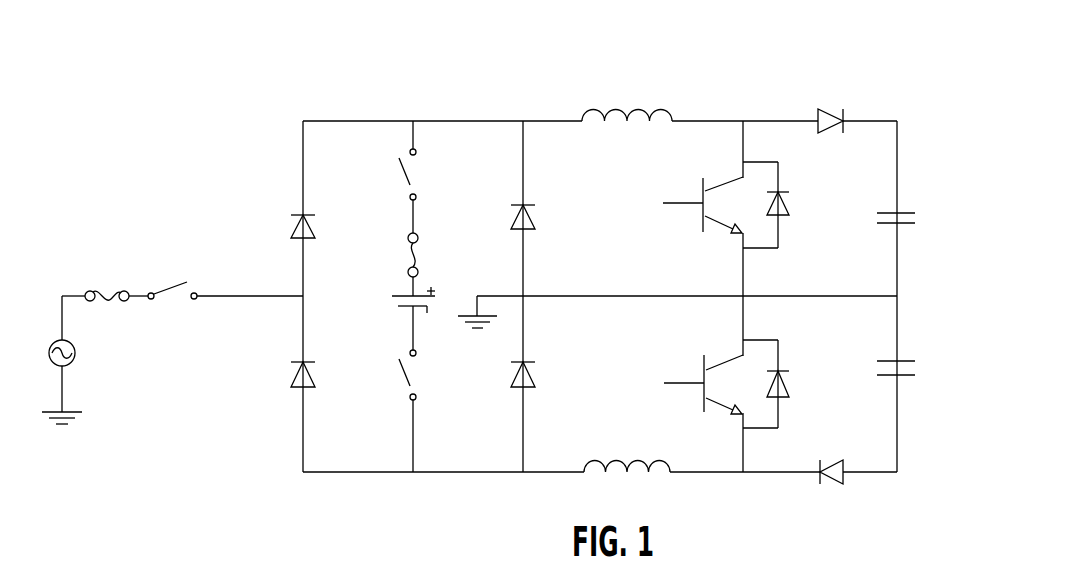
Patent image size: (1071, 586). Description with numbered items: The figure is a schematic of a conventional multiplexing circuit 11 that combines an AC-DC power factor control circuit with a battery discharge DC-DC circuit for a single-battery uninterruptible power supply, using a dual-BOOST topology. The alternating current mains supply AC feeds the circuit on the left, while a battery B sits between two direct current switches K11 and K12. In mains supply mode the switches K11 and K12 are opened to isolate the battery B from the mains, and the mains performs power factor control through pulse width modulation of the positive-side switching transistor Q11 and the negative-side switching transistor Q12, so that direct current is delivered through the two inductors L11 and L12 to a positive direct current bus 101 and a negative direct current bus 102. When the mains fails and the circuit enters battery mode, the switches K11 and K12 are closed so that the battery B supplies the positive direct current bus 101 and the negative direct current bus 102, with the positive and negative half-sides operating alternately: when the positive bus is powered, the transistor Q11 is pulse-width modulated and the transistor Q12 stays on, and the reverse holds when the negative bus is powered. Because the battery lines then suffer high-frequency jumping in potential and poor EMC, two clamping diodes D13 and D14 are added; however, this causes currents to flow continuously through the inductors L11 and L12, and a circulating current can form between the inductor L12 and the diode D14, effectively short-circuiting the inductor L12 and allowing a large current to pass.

The multiplexing circuit 11 is at (626, 276).
The positive direct current bus 101 is at (861, 119).
The negative direct current bus 102 is at (880, 476).
The direct current switch K11 is at (411, 183).
The direct current switch K12 is at (411, 383).
The battery B is at (402, 299).
The clamping diode D13 is at (533, 218).
The clamping diode D14 is at (533, 377).
The inductor L11 is at (598, 106).
The inductor L12 is at (598, 457).
The positive-side switching transistor Q11 is at (698, 196).
The negative-side switching transistor Q12 is at (698, 372).
The alternating current mains supply AC is at (77, 360).